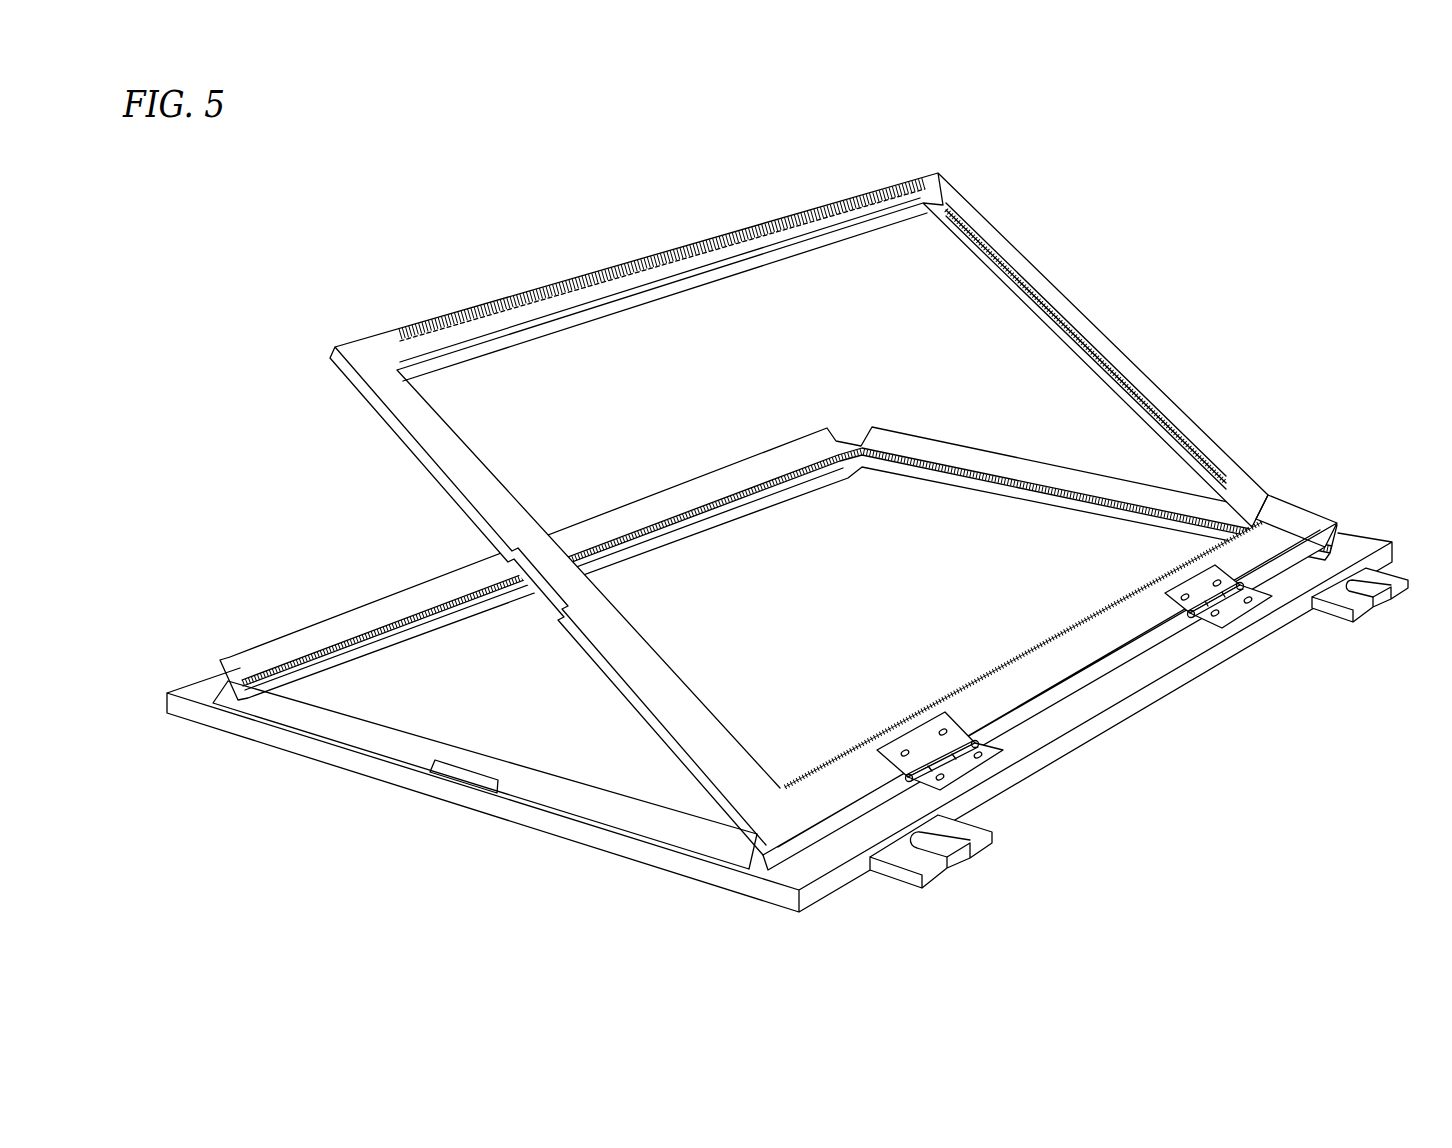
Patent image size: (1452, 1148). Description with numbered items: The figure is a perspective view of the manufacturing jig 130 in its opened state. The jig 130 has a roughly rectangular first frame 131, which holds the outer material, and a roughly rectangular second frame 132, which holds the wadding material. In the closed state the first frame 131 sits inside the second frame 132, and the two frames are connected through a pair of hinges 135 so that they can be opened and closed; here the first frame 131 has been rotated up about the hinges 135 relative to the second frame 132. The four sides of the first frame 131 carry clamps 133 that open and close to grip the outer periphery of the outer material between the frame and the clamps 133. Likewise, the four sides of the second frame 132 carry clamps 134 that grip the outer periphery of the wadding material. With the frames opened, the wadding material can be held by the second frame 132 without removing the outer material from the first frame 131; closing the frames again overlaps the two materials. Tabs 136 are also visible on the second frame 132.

The jig 130 is at (1102, 216).
The first frame 131 is at (248, 645).
The second frame 132 is at (1120, 687).
The clamps 133 is at (602, 272).
The clamps 134 is at (725, 470).
The hinges 135 is at (972, 762).
The mounting tab 136 is at (988, 848).